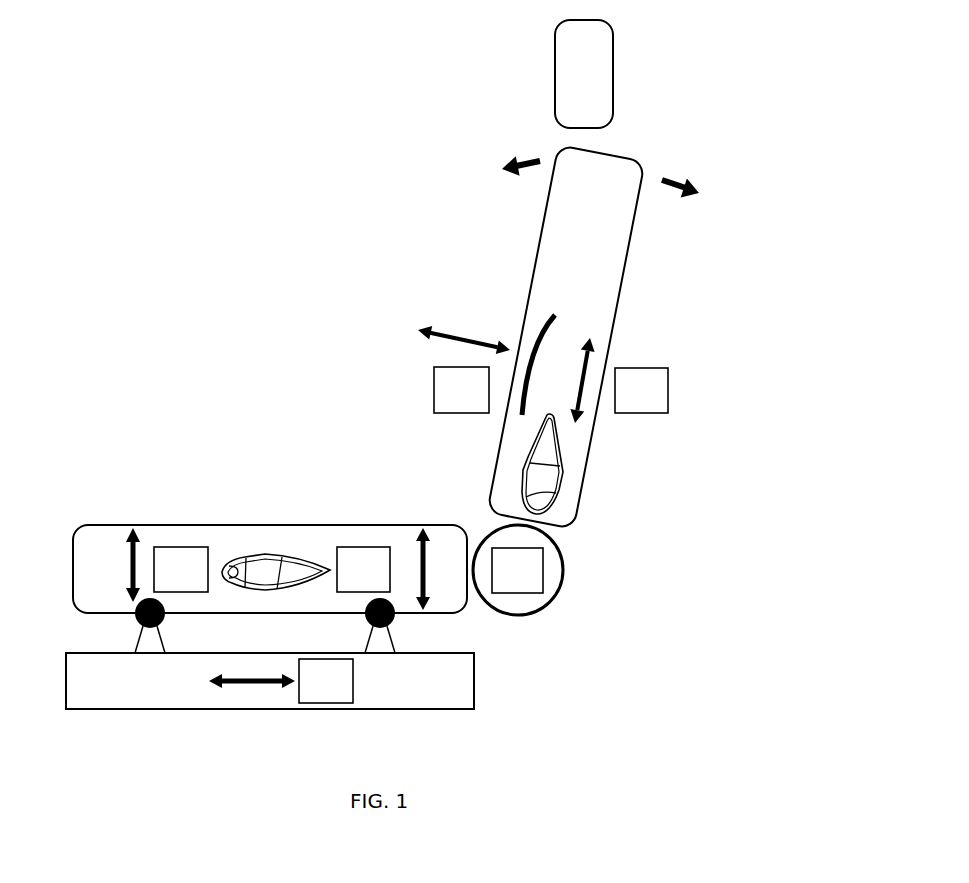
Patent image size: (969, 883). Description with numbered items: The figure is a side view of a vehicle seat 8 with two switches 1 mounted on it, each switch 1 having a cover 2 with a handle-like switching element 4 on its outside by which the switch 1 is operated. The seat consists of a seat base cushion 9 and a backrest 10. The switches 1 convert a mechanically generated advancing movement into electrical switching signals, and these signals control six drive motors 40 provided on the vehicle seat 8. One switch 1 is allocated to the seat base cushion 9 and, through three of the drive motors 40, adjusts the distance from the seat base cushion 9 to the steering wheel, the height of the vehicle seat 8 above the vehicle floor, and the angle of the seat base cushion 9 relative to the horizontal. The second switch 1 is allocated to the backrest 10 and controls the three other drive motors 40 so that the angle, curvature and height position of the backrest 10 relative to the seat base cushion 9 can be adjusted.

The switch 1 is at (423, 382).
The cover 2 is at (568, 446).
The switching element 4 is at (539, 479).
The vehicle seat 8 is at (112, 517).
The seat base cushion 9 is at (77, 616).
The backrest 10 is at (643, 337).
The drive motor 40 is at (237, 418).